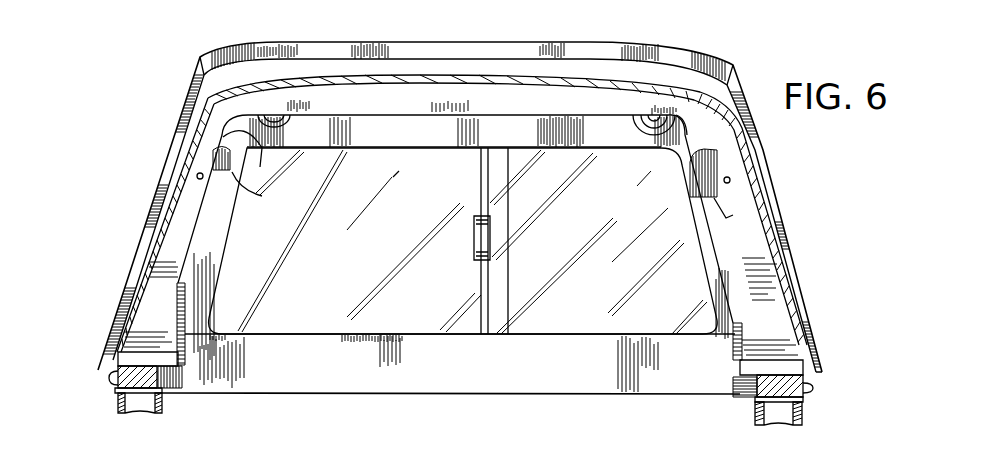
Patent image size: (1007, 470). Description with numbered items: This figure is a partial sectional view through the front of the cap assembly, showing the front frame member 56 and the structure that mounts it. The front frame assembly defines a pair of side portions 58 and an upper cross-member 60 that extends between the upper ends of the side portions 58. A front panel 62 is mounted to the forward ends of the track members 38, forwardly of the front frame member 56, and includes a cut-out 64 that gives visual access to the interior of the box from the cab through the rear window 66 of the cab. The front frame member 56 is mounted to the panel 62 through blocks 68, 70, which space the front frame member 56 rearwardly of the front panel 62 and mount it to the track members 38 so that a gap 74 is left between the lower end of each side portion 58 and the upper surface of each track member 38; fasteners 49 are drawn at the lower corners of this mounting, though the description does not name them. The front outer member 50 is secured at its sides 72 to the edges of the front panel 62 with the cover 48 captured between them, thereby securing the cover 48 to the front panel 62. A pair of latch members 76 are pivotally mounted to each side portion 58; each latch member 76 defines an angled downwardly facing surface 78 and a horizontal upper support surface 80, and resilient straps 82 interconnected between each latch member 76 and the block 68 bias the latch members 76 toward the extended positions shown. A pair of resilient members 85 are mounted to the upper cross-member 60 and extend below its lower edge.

The front outer member 50 is at (206, 54).
The cover 48 is at (590, 76).
The resilient members 85 is at (287, 122).
The horizontal upper support surface 80 is at (264, 150).
The latch members 76 is at (234, 171).
The angled downwardly facing surface 78 is at (262, 196).
The resilient straps 82 is at (199, 205).
The side portions 58 is at (225, 264).
The sides 72 is at (149, 209).
The track members 38 is at (129, 362).
The bolt 49 is at (110, 378).
The gap 74 is at (165, 360).
The block 70 is at (168, 393).
The block 68 is at (184, 333).
The cut-out 64 is at (368, 332).
The front panel 62 is at (470, 396).
The rear window 66 is at (461, 266).
The upper cross-member 60 is at (404, 149).
The front frame member 56 is at (684, 128).